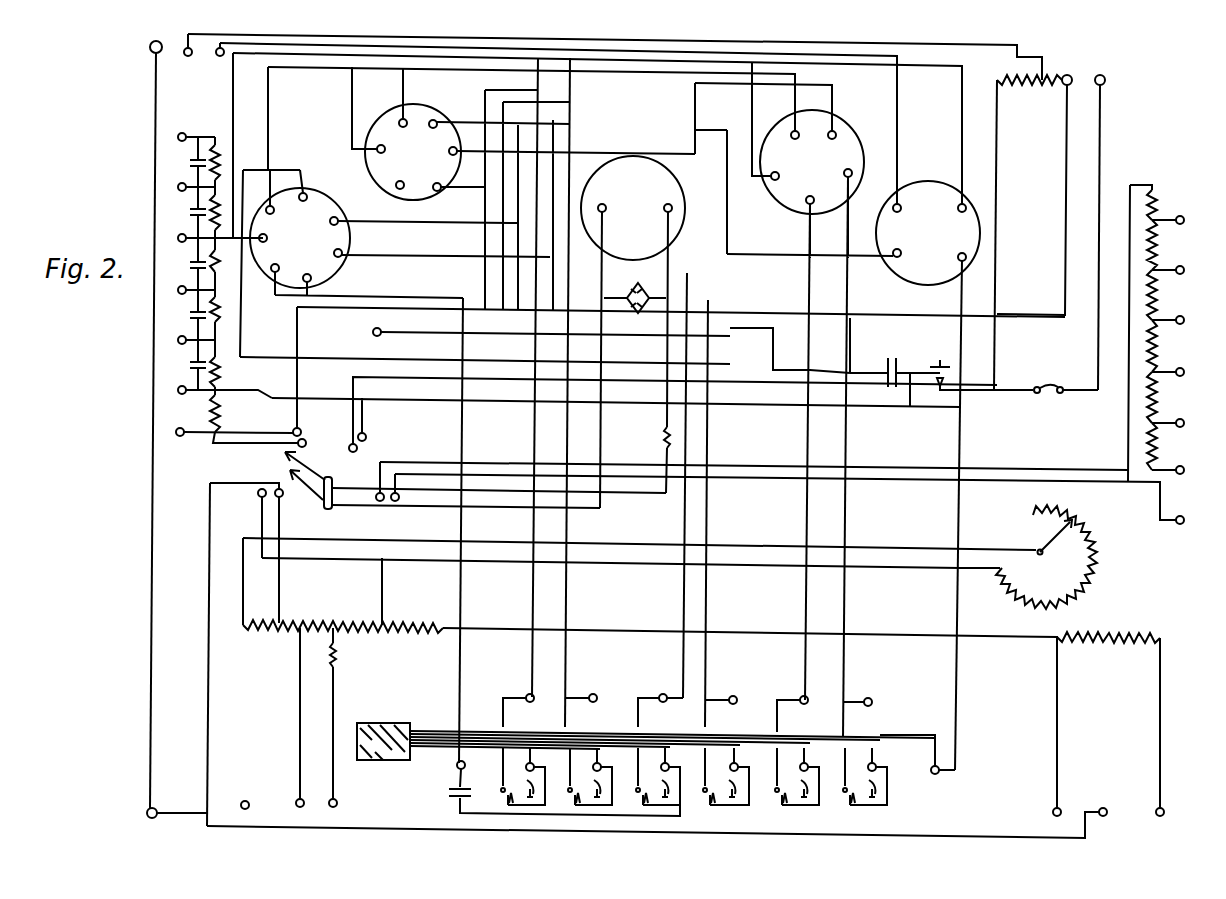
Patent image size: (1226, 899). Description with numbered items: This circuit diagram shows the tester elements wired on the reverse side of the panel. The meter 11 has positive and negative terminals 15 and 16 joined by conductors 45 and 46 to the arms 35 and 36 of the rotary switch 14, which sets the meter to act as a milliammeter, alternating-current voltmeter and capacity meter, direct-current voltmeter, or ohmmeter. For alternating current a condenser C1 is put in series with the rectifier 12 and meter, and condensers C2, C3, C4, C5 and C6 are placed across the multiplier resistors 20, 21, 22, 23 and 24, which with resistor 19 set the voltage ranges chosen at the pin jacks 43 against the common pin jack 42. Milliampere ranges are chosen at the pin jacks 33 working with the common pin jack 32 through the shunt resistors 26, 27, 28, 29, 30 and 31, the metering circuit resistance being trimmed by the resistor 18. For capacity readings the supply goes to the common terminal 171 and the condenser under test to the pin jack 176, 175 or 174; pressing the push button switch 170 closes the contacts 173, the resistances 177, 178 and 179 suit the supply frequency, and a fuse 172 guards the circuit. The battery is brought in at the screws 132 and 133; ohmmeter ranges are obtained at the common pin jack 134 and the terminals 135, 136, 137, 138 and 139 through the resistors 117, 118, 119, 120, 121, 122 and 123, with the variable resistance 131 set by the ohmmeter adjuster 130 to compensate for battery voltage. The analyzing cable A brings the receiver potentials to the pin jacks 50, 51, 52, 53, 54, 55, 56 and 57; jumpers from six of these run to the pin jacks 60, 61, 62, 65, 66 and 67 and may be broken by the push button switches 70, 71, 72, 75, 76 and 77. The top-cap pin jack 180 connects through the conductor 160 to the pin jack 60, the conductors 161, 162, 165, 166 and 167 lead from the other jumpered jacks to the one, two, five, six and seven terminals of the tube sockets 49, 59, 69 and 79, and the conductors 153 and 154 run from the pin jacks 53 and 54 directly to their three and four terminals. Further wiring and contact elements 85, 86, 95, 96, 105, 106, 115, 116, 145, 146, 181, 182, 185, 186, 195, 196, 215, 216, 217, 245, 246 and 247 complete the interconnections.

The meter 11 is at (606, 186).
The rectifier 12 is at (628, 284).
The rotary switch 14 is at (333, 507).
The positive terminal 15 is at (606, 211).
The negative terminal 16 is at (665, 212).
The resistor 18 is at (663, 438).
The resistor 19 is at (221, 414).
The multiplier resistor 20 is at (221, 372).
The multiplier resistor 21 is at (221, 310).
The multiplier resistor 22 is at (221, 262).
The multiplier resistor 23 is at (221, 208).
The multiplier resistor 24 is at (221, 162).
The shunt resistor 26 is at (1158, 202).
The shunt resistor 27 is at (1160, 242).
The shunt resistor 28 is at (1157, 300).
The shunt resistor 29 is at (1157, 350).
The shunt resistor 30 is at (1157, 402).
The shunt resistor 31 is at (1157, 452).
The common terminal pin jack 32 is at (1183, 517).
The pin jacks 33 is at (1183, 266).
The arm 35 is at (308, 492).
The arm 36 is at (310, 470).
The common pin jack 42 is at (176, 432).
The pin jacks 43 is at (178, 237).
The conductor 45 is at (602, 267).
The conductor 46 is at (695, 352).
The socket 49 is at (975, 235).
The T. C. pin jack 50 is at (669, 766).
The pin jack 51 is at (601, 766).
The pin jack 52 is at (534, 766).
The pin jack 53 is at (466, 767).
The pin jack 54 is at (934, 775).
The pin jack 55 is at (876, 766).
The pin jack 56 is at (808, 766).
The pin jack 57 is at (738, 766).
The socket 59 is at (852, 148).
The pin jack 60 is at (665, 694).
The pin jack 61 is at (597, 696).
The pin jack 62 is at (527, 695).
The pin jack 65 is at (872, 698).
The pin jack 66 is at (807, 697).
The pin jack 67 is at (736, 697).
The socket 69 is at (418, 112).
The push button switch 70 is at (665, 782).
The push button switch 71 is at (597, 782).
The push button switch 72 is at (530, 782).
The push button switch 75 is at (872, 782).
The push button switch 76 is at (804, 782).
The push button switch 77 is at (732, 782).
The socket 79 is at (330, 200).
The D.C. milliampere terminal 85 is at (383, 503).
The D.C. milliampere terminal 86 is at (399, 503).
The A.C. volts terminal 95 is at (353, 453).
The MFDS terminal 96 is at (368, 440).
The D.C. volts terminal 105 is at (307, 443).
The D.C. volts terminal 106 is at (302, 430).
The ohms terminal 115 is at (276, 497).
The ohms terminal 116 is at (258, 496).
The resistor 117 is at (260, 632).
The resistor 118 is at (292, 622).
The resistor 119 is at (322, 634).
The resistor 120 is at (338, 660).
The resistor 121 is at (345, 620).
The resistor 122 is at (397, 620).
The resistor 123 is at (1108, 634).
The ohmmeter adjuster 130 is at (1038, 548).
The variable resistance 131 is at (1095, 572).
The screw 132 is at (185, 808).
The screw 133 is at (153, 57).
The common terminal pin jack 134 is at (248, 800).
The terminal 135 is at (300, 798).
The terminal 136 is at (336, 798).
The terminal 137 is at (1061, 808).
The terminal 138 is at (1106, 808).
The terminal 139 is at (1164, 810).
The conductor 145 is at (268, 445).
The conductor 146 is at (233, 445).
The conductor 153 is at (470, 298).
The conductor 154 is at (957, 618).
The conductor 160 is at (683, 597).
The conductor 161 is at (568, 608).
The conductor 162 is at (535, 596).
The conductor 165 is at (846, 608).
The conductor 166 is at (802, 606).
The conductor 167 is at (706, 604).
The push button switch 170 is at (952, 366).
The common terminal 171 is at (1103, 86).
The fuse 172 is at (1055, 394).
The contacts 173 is at (938, 386).
The pin jack 174 is at (1069, 86).
The pin jack 175 is at (225, 57).
The pin jack 176 is at (185, 58).
The resistance 177 is at (1050, 88).
The resistance 178 is at (1025, 86).
The resistance 179 is at (1003, 78).
The pin jack 180 is at (383, 336).
The conductor 181 is at (996, 280).
The capacitor 182 is at (447, 790).
The conductor 185 is at (905, 468).
The conductor 186 is at (908, 482).
The conductor 195 is at (500, 368).
The conductor 196 is at (508, 400).
The conductor 215 is at (212, 728).
The conductor 216 is at (915, 572).
The conductor 217 is at (915, 536).
The conductor 245 is at (765, 408).
The conductor 246 is at (332, 316).
The conductor 247 is at (770, 356).
The cable A is at (386, 728).
The condenser C1 is at (896, 356).
The condenser C2 is at (190, 365).
The condenser C3 is at (190, 315).
The condenser C4 is at (190, 265).
The condenser C5 is at (190, 212).
The condenser C6 is at (190, 163).